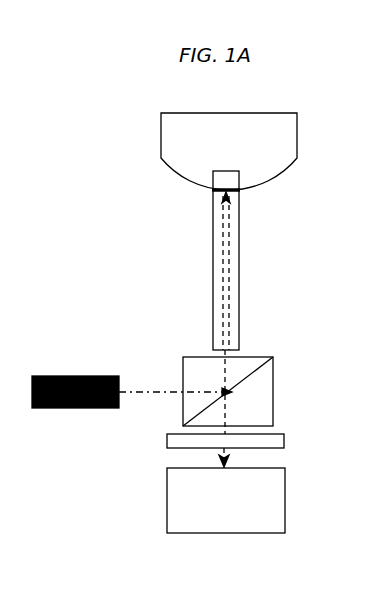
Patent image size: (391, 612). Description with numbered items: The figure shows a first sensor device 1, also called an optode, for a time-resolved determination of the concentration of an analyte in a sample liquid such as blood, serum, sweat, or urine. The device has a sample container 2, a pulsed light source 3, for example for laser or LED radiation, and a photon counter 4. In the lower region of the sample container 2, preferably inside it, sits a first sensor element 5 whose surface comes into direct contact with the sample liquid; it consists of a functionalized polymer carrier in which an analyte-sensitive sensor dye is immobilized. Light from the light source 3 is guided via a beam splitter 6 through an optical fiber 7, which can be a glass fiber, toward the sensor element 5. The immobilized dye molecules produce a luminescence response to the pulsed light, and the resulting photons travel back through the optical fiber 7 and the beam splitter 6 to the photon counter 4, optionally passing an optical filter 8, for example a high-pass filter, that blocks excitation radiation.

The first sensor device 1 is at (313, 200).
The sample container 2 is at (185, 174).
The pulsed light source 3 is at (70, 376).
The photon counter 4 is at (217, 525).
The first sensor element 5 is at (232, 191).
The beam splitter 6 is at (267, 373).
The optical fiber 7 is at (228, 320).
The optical filter 8 is at (278, 446).